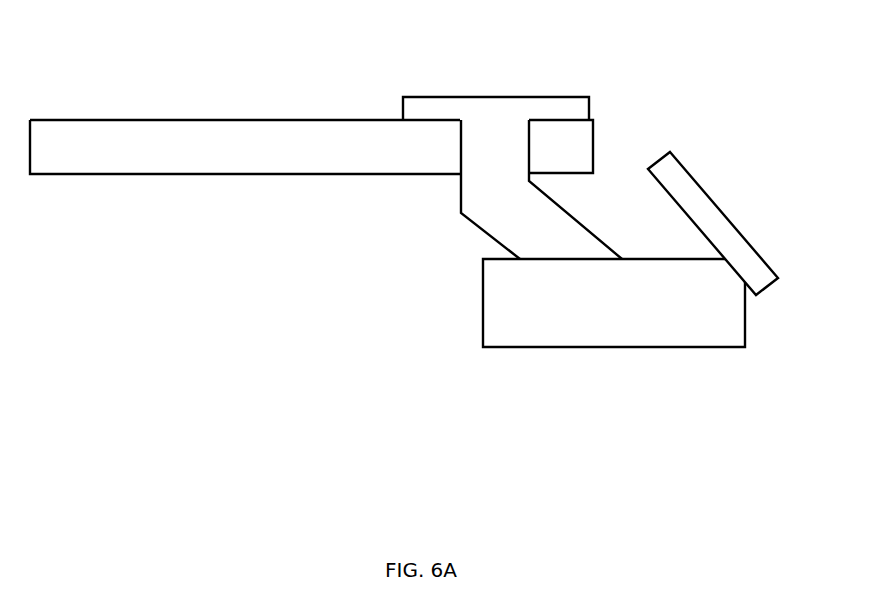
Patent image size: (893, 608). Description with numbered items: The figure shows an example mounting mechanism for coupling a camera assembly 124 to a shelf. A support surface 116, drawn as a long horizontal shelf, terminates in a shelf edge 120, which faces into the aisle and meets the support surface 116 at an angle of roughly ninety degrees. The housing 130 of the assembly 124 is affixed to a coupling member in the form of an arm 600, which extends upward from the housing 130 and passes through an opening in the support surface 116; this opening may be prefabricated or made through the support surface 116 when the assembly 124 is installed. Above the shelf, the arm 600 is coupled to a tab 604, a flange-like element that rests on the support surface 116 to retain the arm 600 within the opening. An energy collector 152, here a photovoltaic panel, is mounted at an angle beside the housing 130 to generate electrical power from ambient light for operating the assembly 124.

The support surface 116 is at (236, 120).
The tab 604 is at (433, 97).
The shelf edge 120 is at (595, 138).
The arm 600 is at (482, 233).
The assembly 124 is at (462, 322).
The housing 130 is at (553, 347).
The energy collector 152 is at (669, 153).